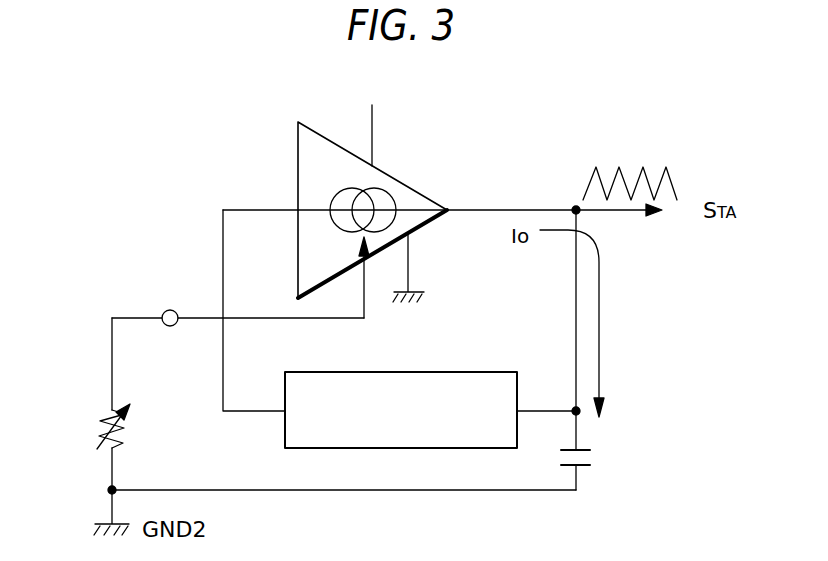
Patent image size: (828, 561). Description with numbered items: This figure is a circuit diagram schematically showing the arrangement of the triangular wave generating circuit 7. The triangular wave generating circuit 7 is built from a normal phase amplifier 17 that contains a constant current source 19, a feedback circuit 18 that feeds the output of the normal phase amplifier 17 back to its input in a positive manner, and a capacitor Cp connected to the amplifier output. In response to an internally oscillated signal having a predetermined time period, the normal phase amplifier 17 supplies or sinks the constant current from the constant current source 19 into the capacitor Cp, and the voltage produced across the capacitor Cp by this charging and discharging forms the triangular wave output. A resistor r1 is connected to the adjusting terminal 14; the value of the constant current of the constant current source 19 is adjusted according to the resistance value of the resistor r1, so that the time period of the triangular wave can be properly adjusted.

The triangular wave generating circuit 7 is at (522, 137).
The adjusting terminal 14 is at (170, 310).
The normal phase amplifier 17 is at (412, 188).
The feedback circuit 18 is at (402, 372).
The constant current source 19 is at (336, 193).
The capacitor Cp is at (594, 459).
The resistor r1 is at (100, 420).